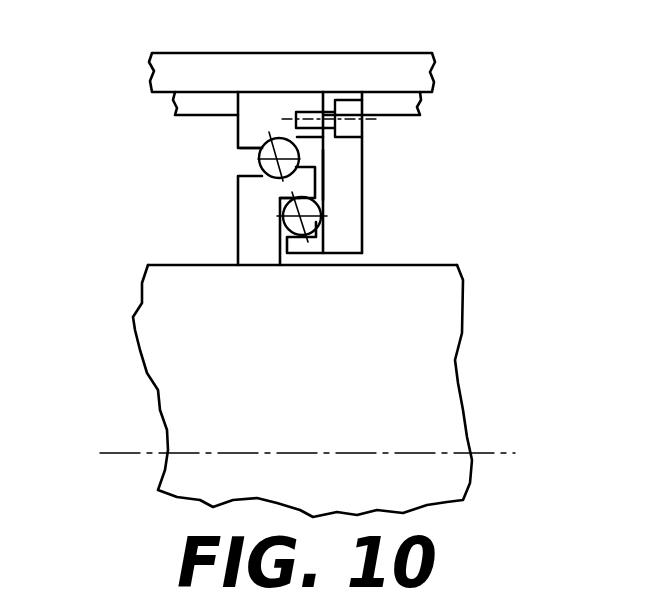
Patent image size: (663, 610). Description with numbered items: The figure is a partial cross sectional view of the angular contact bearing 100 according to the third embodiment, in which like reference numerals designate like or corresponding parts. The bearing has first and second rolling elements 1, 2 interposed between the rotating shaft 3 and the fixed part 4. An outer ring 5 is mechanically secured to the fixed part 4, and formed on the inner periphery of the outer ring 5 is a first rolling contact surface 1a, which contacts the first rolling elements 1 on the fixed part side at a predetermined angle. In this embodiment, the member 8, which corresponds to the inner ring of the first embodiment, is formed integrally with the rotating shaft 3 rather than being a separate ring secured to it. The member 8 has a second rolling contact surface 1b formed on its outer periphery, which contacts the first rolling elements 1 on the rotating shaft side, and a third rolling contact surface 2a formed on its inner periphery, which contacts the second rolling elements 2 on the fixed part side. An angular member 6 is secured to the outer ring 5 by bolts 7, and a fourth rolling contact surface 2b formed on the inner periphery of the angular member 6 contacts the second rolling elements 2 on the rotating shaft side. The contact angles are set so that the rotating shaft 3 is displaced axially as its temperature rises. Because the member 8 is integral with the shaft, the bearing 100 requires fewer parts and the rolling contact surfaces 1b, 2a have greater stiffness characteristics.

The angular contact bearing 100 is at (163, 110).
The fixed part 4 is at (417, 77).
The outer ring 5 is at (274, 108).
The angular member 6 is at (346, 153).
The bolt 7 is at (353, 128).
The first rolling element 1 is at (258, 160).
The first rolling contact surface 1a is at (262, 148).
The second rolling contact surface 1b is at (325, 183).
The second rolling element 2 is at (327, 214).
The third rolling contact surface 2a is at (280, 198).
The fourth rolling contact surface 2b is at (313, 233).
The member corresponding to the inner ring 8 is at (258, 247).
The rotating shaft 3 is at (418, 303).